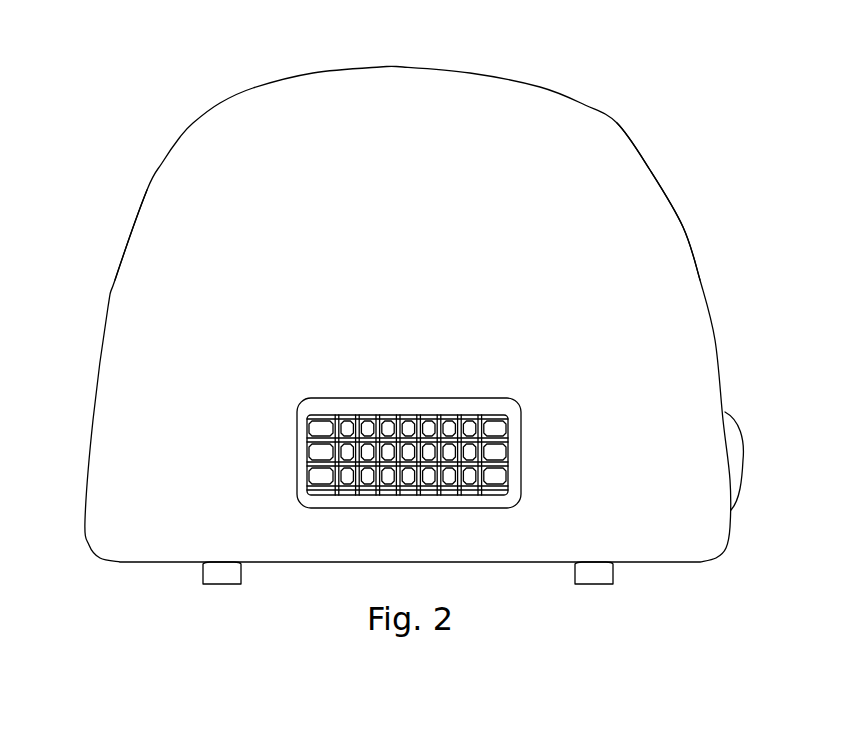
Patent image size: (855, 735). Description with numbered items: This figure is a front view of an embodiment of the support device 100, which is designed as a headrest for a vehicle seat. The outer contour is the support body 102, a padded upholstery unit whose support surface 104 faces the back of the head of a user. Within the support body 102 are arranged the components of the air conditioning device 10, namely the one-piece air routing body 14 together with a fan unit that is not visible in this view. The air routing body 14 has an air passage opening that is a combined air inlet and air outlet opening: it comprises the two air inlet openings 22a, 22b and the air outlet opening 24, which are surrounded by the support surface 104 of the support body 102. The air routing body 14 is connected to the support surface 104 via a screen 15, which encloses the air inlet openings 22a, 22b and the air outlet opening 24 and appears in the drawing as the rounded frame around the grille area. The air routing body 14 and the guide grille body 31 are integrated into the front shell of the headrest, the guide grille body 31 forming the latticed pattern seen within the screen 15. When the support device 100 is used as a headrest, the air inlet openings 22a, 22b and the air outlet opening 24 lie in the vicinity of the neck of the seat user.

The support device 100 is at (653, 115).
The support body 102 is at (147, 190).
The support surface 104 is at (572, 305).
The air conditioning device 10 is at (282, 397).
The screen 15 is at (513, 417).
The air outlet opening 24 is at (405, 437).
The air inlet opening 22a is at (325, 452).
The air inlet opening 22b is at (488, 453).
The air routing body 14 is at (370, 468).
The guide grille body 31 is at (447, 460).